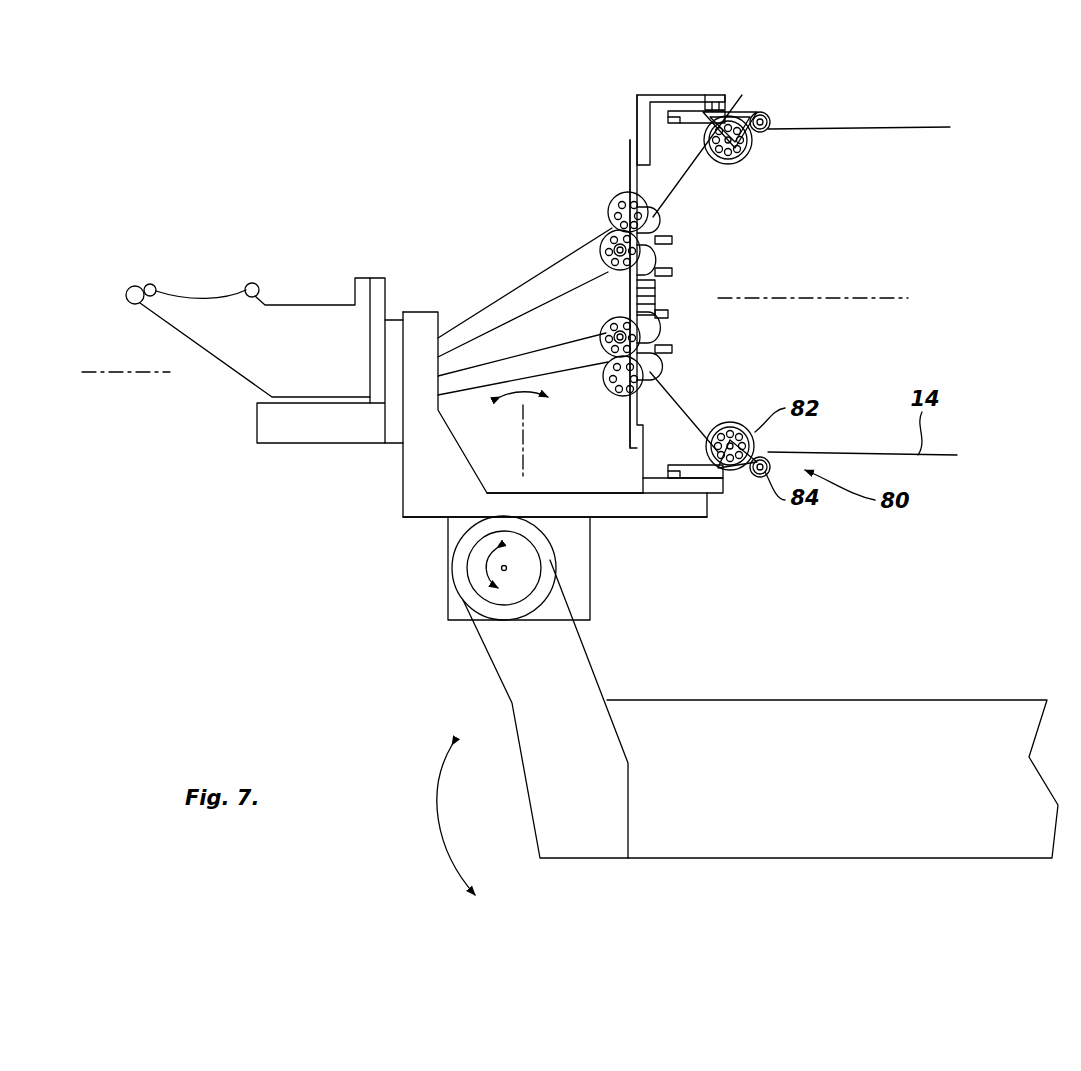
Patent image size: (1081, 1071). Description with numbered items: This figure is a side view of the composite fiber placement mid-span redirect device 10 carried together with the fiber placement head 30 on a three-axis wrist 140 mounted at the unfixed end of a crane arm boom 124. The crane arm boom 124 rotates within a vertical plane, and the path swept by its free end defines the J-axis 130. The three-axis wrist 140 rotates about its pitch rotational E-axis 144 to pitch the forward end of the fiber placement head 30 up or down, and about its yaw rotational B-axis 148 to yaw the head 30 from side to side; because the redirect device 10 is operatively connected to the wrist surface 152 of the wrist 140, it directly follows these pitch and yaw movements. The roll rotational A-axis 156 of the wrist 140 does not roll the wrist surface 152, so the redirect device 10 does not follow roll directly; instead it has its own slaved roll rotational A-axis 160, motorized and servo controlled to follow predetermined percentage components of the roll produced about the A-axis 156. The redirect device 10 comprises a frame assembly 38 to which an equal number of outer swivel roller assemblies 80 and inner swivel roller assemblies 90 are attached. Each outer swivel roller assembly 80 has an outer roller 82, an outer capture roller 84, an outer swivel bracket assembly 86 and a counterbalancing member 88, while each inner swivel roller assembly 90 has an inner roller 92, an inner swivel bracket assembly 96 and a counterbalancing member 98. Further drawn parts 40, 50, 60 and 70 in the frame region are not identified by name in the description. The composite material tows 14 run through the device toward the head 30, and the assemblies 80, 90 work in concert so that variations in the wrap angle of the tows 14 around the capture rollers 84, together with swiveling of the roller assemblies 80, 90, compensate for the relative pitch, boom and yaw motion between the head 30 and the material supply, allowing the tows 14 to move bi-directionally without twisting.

The composite fiber placement mid-span redirect device 10 is at (580, 105).
The composite material tows 14 is at (930, 128).
The fiber placement head 30 is at (302, 318).
The frame assembly 38 is at (595, 138).
The rail 40 is at (632, 418).
The clamp block 50 is at (660, 315).
The frame 60 is at (678, 98).
The base plate 70 is at (662, 500).
The outer swivel roller assembly 80 is at (774, 115).
The outer roller 82 is at (752, 162).
The outer capture roller 84 is at (770, 118).
The outer swivel bracket assembly 86 is at (714, 125).
The counterbalancing member 88 is at (680, 124).
The inner swivel roller assembly 90 is at (657, 281).
The inner roller 92 is at (610, 213).
The inner swivel bracket assembly 96 is at (660, 350).
The counterbalancing member 98 is at (672, 240).
The crane arm boom 124 is at (948, 715).
The J-axis 130 is at (440, 832).
The three-axis wrist 140 is at (423, 568).
The pitch rotational E-axis 144 is at (503, 570).
The yaw rotational B-axis 148 is at (522, 447).
The wrist surface 152 is at (548, 503).
The roll rotational A-axis 156 is at (130, 376).
The slaved roll rotational A-axis 160 is at (885, 298).